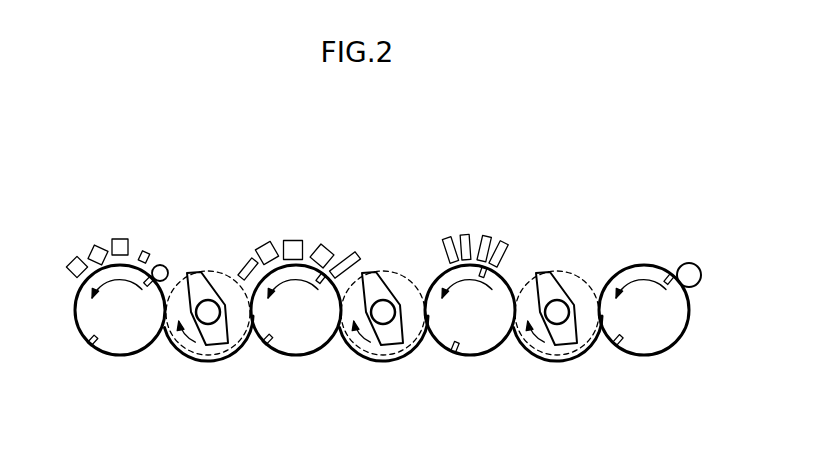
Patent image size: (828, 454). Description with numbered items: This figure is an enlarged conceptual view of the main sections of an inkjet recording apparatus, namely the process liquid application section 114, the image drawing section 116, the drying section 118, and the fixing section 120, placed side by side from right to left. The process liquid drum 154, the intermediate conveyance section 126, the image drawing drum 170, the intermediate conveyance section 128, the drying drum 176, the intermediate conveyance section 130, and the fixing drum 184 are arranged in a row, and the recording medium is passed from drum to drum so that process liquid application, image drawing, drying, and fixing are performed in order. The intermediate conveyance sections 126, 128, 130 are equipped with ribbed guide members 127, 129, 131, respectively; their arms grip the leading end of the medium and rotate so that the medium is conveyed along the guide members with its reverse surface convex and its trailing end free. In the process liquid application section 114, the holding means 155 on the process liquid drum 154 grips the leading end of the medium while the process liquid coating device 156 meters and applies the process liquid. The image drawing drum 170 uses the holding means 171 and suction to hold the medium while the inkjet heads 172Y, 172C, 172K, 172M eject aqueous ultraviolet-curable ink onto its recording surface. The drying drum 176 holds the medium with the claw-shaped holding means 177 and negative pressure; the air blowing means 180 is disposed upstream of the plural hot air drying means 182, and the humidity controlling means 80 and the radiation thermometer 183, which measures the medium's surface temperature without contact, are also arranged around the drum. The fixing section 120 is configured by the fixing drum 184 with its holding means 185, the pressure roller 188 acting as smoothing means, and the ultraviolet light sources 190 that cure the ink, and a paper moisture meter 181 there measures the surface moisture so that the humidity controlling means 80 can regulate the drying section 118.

The process liquid application section 114 is at (662, 214).
The image drawing section 116 is at (486, 167).
The drying section 118 is at (313, 167).
The fixing section 120 is at (139, 167).
The humidity controlling means 80 is at (263, 242).
The intermediate conveyance section 126 is at (566, 350).
The guide member 127 is at (529, 359).
The intermediate conveyance section 128 is at (392, 350).
The guide member 129 is at (355, 359).
The intermediate conveyance section 130 is at (213, 351).
The guide member 131 is at (180, 359).
The process liquid drum 154 is at (650, 343).
The holding means 155 is at (617, 344).
The process liquid coating device 156 is at (690, 263).
The image drawing drum 170 is at (473, 343).
The holding means 171 is at (455, 352).
The inkjet head 172Y is at (447, 237).
The inkjet head 172C is at (466, 234).
The inkjet head 172K is at (487, 236).
The inkjet head 172M is at (506, 242).
The drying drum 176 is at (298, 343).
The holding means 177 is at (268, 344).
The air blowing means 180 is at (348, 258).
The paper moisture meter 181 is at (144, 251).
The hot air drying means 182 is at (319, 246).
The radiation thermometer 183 is at (243, 259).
The fixing drum 184 is at (125, 343).
The holding means 185 is at (93, 344).
The pressure roller 188 is at (163, 265).
The ultraviolet light sources 190 is at (71, 258).